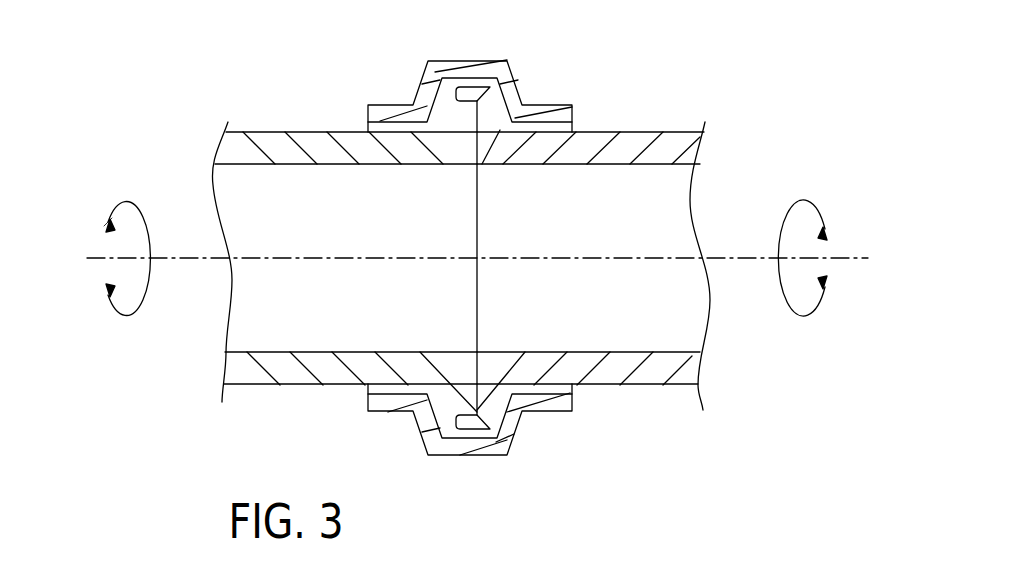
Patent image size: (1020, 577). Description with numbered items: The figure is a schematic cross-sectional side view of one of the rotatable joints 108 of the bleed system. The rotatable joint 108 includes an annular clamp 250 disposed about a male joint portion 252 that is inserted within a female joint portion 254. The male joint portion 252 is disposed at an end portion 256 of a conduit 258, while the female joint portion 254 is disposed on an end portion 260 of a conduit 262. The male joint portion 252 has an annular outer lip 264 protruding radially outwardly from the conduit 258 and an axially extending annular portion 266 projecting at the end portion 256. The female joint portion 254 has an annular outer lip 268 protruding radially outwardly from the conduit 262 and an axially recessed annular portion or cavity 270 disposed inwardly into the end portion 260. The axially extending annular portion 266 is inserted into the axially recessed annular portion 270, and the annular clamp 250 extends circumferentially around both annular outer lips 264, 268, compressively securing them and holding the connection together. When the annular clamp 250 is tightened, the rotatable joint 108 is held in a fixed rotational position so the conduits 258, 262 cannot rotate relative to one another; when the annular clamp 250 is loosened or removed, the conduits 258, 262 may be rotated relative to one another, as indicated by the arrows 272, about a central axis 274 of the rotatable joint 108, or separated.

The rotatable joint 108 is at (630, 44).
The annular clamp 250 is at (508, 430).
The male joint portion 252 is at (346, 264).
The female joint portion 254 is at (607, 268).
The end portion 256 is at (370, 372).
The conduit 258 is at (278, 150).
The end portion 260 is at (577, 372).
The conduit 262 is at (633, 138).
The annular outer lip 264 is at (447, 95).
The axially extending annular portion 266 is at (440, 118).
The annular outer lip 268 is at (471, 84).
The axially recessed annular portion 270 is at (477, 390).
The arrows 272 is at (147, 303).
The central axis 274 is at (105, 258).